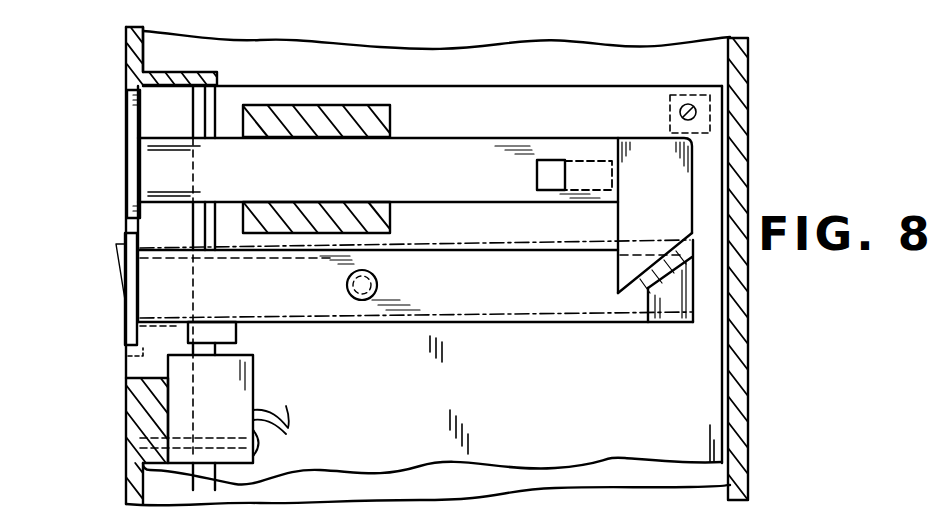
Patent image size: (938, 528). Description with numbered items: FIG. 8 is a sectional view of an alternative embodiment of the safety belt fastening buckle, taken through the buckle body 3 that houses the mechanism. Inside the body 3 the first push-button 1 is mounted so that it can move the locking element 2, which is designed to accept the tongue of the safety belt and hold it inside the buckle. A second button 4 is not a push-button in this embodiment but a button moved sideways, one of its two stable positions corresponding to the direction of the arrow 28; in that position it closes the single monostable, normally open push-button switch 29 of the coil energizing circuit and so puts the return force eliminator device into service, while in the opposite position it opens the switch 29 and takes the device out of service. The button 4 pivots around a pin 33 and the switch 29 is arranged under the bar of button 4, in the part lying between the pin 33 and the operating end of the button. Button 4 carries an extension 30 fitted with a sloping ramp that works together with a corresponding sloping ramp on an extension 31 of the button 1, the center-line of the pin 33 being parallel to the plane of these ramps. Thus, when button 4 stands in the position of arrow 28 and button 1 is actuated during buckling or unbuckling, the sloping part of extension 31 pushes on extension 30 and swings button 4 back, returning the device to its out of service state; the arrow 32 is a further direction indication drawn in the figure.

The first push-button 1 is at (127, 103).
The locking element 2 is at (547, 160).
The body 3 is at (593, 91).
The second button 4 is at (128, 318).
The arrow 28 is at (97, 260).
The push-button switch 29 is at (246, 392).
The extension 30 is at (670, 327).
The extension 31 is at (668, 216).
The direction arrow 32 is at (102, 163).
The pin 33 is at (362, 290).